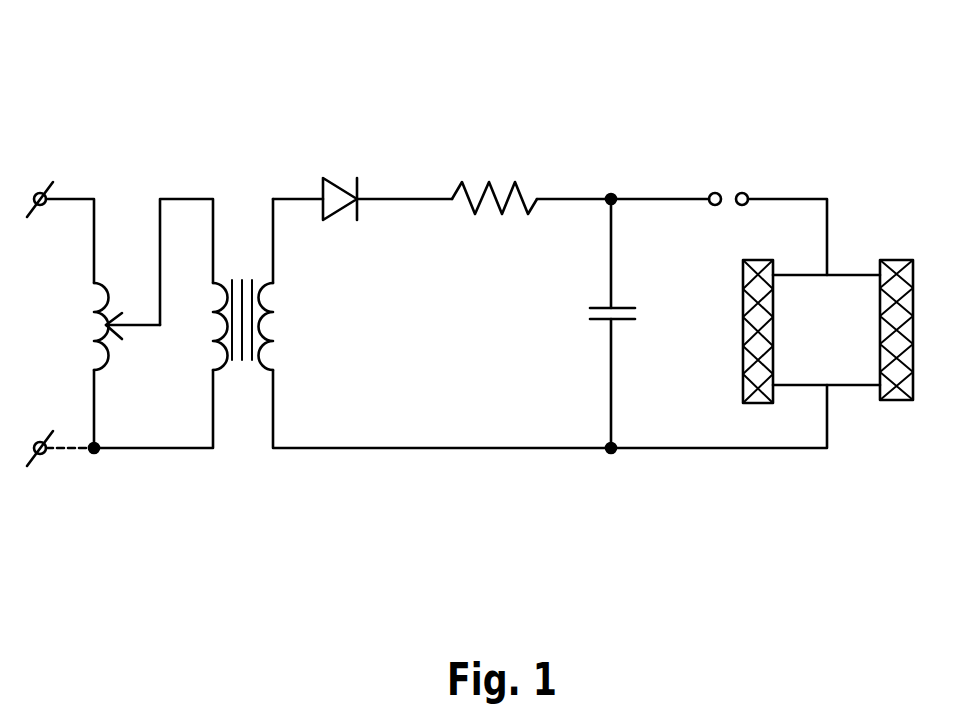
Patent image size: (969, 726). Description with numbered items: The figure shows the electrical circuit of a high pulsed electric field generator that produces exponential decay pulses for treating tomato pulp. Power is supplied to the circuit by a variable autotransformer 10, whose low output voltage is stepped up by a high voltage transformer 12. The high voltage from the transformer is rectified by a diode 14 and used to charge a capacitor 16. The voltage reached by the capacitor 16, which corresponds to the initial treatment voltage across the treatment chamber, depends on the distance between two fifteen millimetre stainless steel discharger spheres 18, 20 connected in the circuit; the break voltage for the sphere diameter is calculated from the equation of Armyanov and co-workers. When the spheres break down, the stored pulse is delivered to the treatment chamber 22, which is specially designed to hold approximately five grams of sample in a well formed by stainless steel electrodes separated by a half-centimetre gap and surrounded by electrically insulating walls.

The variable autotransformer 10 is at (166, 198).
The high voltage transformer 12 is at (237, 272).
The diode 14 is at (335, 176).
The capacitor 16 is at (662, 312).
The discharger sphere 18 is at (708, 192).
The discharger sphere 20 is at (742, 190).
The treatment chamber 22 is at (882, 260).